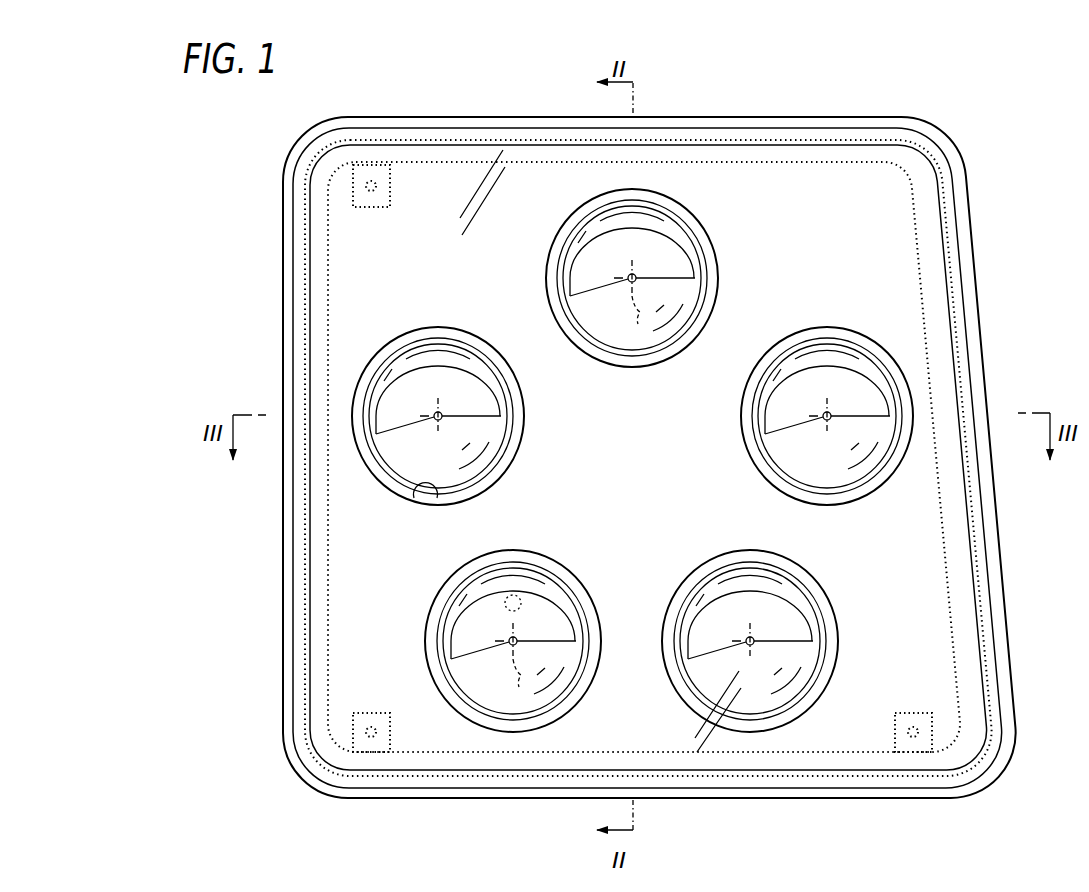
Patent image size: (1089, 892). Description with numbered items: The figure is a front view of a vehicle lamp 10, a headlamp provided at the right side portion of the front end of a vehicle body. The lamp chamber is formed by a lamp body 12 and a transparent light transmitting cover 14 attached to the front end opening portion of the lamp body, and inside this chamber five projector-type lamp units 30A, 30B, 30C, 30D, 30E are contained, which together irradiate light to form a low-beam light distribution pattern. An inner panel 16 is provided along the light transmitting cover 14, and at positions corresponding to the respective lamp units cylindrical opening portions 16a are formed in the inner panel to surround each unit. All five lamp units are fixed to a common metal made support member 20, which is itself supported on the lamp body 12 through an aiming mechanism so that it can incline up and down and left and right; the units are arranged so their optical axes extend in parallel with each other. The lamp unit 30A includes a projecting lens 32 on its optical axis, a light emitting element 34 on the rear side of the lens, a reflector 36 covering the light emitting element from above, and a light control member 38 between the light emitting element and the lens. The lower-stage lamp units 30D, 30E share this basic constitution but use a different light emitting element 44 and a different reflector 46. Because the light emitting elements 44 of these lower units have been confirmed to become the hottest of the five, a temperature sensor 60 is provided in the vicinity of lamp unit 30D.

The vehicle lamp 10 is at (1000, 150).
The lamp body 12 is at (283, 251).
The light transmitting cover 14 is at (290, 338).
The inner panel 16 is at (951, 283).
The cylindrical opening portion 16a is at (385, 492).
The metal made support member 20 is at (953, 582).
The lamp unit 30A is at (666, 278).
The lamp unit 30B is at (481, 416).
The lamp unit 30C is at (887, 416).
The lamp unit 30D is at (529, 628).
The lamp unit 30E is at (766, 628).
The projecting lens 32 is at (567, 448).
The light emitting element 34 is at (645, 348).
The reflector 36 is at (646, 206).
The light control member 38 is at (508, 439).
The light emitting element 44 is at (663, 627).
The reflector 46 is at (502, 550).
The temperature sensor 60 is at (541, 569).